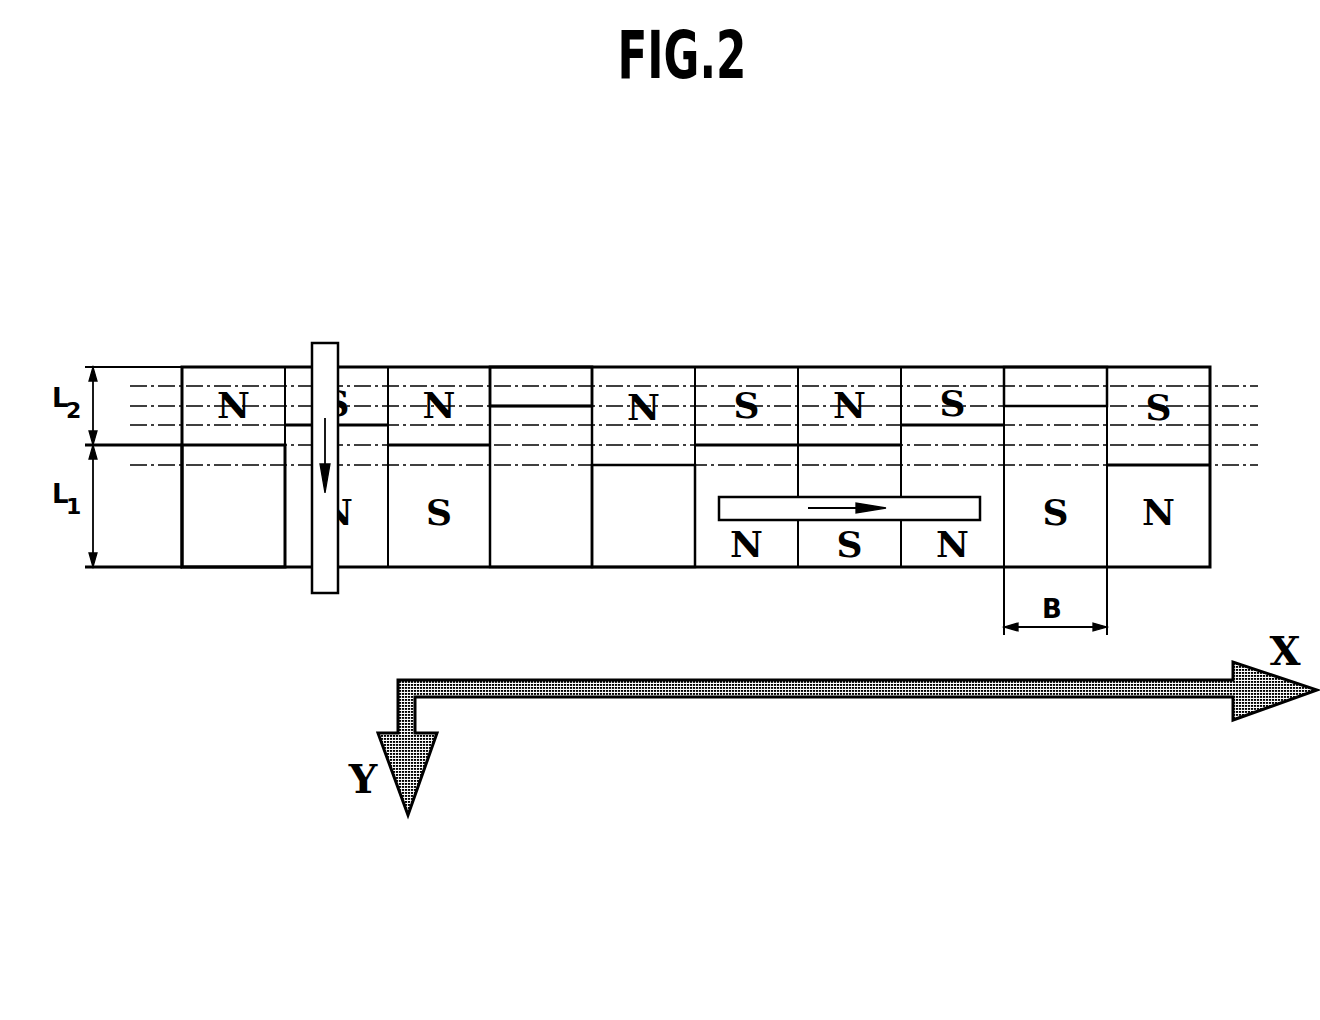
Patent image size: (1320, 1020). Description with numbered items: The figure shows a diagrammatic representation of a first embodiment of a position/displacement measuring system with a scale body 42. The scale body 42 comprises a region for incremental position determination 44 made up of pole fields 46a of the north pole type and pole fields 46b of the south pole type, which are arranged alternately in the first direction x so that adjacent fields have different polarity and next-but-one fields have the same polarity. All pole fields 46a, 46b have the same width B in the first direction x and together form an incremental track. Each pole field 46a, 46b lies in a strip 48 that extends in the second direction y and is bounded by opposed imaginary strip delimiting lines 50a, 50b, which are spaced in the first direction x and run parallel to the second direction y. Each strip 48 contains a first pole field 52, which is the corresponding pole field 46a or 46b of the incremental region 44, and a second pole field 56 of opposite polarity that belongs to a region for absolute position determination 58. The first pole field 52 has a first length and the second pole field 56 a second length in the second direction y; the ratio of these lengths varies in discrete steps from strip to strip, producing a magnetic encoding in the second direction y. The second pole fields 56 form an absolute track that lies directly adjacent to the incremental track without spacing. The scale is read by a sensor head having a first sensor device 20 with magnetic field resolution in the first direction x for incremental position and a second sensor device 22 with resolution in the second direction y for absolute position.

The first sensor device 20 is at (885, 514).
The second sensor device 22 is at (323, 354).
The scale body 42 is at (832, 370).
The region for incremental position determination 44 is at (212, 545).
The pole field of the north pole type 46a is at (547, 545).
The pole field of the south pole type 46b is at (622, 547).
The strip 48 is at (568, 378).
The strip delimiting line 50a is at (483, 378).
The strip delimiting line 50b is at (594, 378).
The first pole field 52 is at (507, 555).
The second pole field 56 is at (516, 378).
The region for absolute position determination 58 is at (1083, 370).